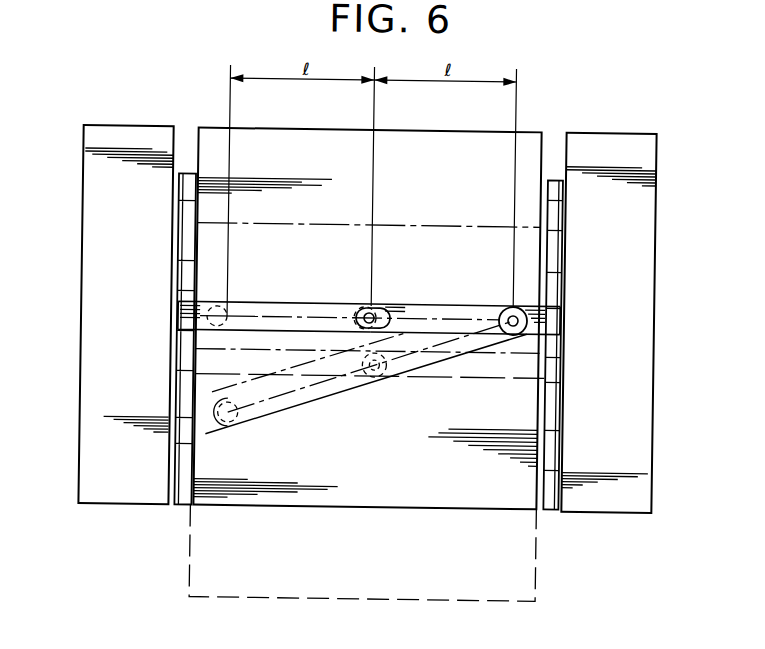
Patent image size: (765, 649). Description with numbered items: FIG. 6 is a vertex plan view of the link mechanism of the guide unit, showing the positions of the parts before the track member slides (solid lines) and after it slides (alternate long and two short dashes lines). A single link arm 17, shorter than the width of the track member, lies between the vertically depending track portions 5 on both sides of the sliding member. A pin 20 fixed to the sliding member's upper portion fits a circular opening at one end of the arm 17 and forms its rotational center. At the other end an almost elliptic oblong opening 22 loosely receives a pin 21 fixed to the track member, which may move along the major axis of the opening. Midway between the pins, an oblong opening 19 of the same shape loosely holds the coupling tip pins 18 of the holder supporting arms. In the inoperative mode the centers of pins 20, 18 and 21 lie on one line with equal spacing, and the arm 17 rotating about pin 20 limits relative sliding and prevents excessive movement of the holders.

The track portion 5 is at (84, 322).
The arm 17 is at (423, 360).
The coupling tip pin 18 is at (408, 309).
The oblong opening 19 is at (358, 314).
The pin 20 is at (523, 310).
The pin 21 is at (233, 319).
The oblong opening 22 is at (216, 308).